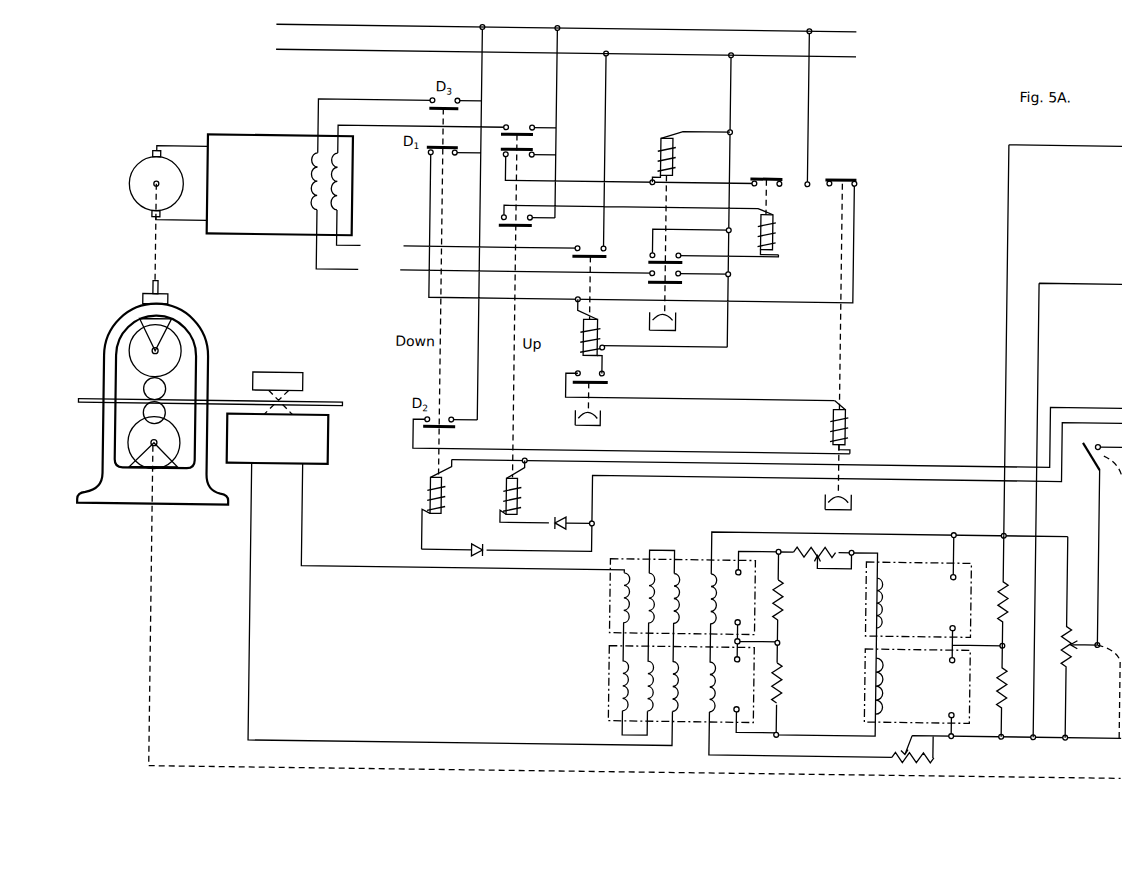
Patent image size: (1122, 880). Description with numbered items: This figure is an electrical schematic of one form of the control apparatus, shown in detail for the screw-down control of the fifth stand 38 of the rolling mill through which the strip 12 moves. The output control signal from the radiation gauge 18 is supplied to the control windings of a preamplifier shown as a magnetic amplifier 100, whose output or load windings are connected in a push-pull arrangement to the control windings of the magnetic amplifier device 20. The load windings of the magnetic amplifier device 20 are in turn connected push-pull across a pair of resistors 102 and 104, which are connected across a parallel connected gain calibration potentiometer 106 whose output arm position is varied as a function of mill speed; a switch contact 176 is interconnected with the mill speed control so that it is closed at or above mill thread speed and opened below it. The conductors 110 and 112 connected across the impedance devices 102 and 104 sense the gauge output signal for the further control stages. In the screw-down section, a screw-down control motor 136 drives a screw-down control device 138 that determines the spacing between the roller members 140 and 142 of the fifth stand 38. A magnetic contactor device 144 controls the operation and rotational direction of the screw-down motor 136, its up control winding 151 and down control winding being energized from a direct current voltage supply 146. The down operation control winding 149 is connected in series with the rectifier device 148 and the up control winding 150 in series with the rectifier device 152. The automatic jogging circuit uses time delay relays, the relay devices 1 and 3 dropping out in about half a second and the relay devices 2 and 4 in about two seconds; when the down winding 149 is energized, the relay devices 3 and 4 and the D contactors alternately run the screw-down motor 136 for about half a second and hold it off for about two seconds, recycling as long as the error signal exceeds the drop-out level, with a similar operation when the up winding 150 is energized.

The screw-down control motor 136 is at (158, 181).
The magnetic contactor device 144 is at (280, 175).
The up control winding 151 is at (346, 182).
The direct current voltage supply 146 is at (616, 52).
The screw-down control device 138 is at (138, 290).
The fifth stand 38 is at (204, 297).
The roller member 142 is at (126, 393).
The roller member 140 is at (255, 380).
The strip 12 is at (210, 391).
The radiation gauge 18 is at (291, 439).
The down operation control winding 149 is at (420, 504).
The up control winding 150 is at (533, 487).
The rectifier device 148 is at (471, 538).
The rectifier device 152 is at (552, 514).
The magnetic amplifier 100 is at (698, 539).
The magnetic amplifier device 20 is at (926, 600).
The resistor 102 is at (987, 636).
The resistor 104 is at (941, 751).
The gain calibration potentiometer 106 is at (1082, 638).
The switch contact 176 is at (1091, 591).
The conductor 112 is at (1044, 340).
The conductor 110 is at (1077, 510).
The relay device 1 is at (673, 126).
The relay device 2 is at (765, 169).
The relay device 3 is at (591, 238).
The relay device 4 is at (843, 168).